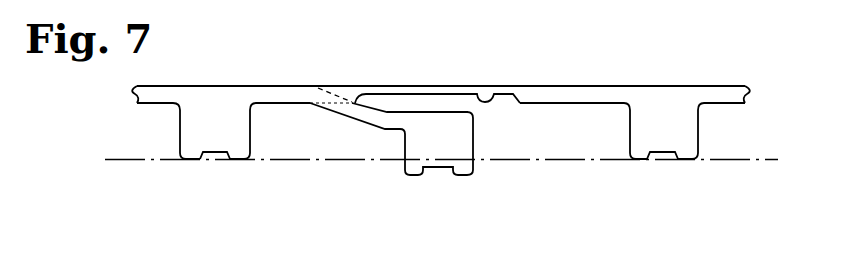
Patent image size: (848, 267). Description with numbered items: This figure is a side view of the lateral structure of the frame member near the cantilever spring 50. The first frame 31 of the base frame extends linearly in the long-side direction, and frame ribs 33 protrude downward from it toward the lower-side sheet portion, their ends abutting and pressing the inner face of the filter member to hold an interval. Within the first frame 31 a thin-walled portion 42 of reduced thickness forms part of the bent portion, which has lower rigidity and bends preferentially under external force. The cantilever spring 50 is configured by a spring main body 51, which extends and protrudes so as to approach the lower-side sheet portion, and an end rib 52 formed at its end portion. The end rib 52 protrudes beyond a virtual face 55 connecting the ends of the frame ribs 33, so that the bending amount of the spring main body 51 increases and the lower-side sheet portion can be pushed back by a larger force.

The first frame 31 is at (597, 85).
The frame rib 33 is at (210, 147).
The thin-walled portion 42 is at (492, 93).
The cantilever spring 50 is at (391, 180).
The spring main body 51 is at (370, 123).
The end rib 52 is at (436, 165).
The virtual face 55 is at (533, 160).